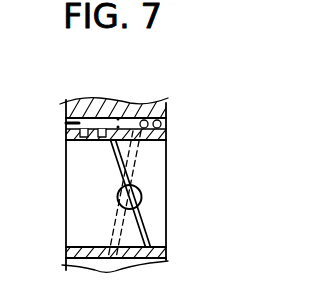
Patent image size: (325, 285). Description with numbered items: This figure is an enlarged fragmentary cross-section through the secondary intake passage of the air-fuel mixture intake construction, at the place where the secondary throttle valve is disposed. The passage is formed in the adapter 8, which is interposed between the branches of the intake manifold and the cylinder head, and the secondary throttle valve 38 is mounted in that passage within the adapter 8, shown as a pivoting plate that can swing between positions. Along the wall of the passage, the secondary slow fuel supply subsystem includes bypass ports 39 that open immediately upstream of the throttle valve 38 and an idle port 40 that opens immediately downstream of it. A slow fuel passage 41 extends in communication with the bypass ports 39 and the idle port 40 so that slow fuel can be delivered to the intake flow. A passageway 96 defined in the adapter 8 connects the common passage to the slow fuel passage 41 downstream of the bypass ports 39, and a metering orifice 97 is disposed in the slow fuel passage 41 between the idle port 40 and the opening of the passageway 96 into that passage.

The adapter 8 is at (185, 197).
The secondary throttle valve 38 is at (184, 238).
The bypass ports 39 is at (77, 156).
The idle port 40 is at (100, 172).
The slow fuel passage 41 is at (66, 122).
The passageway 96 is at (183, 161).
The metering orifice 97 is at (183, 96).